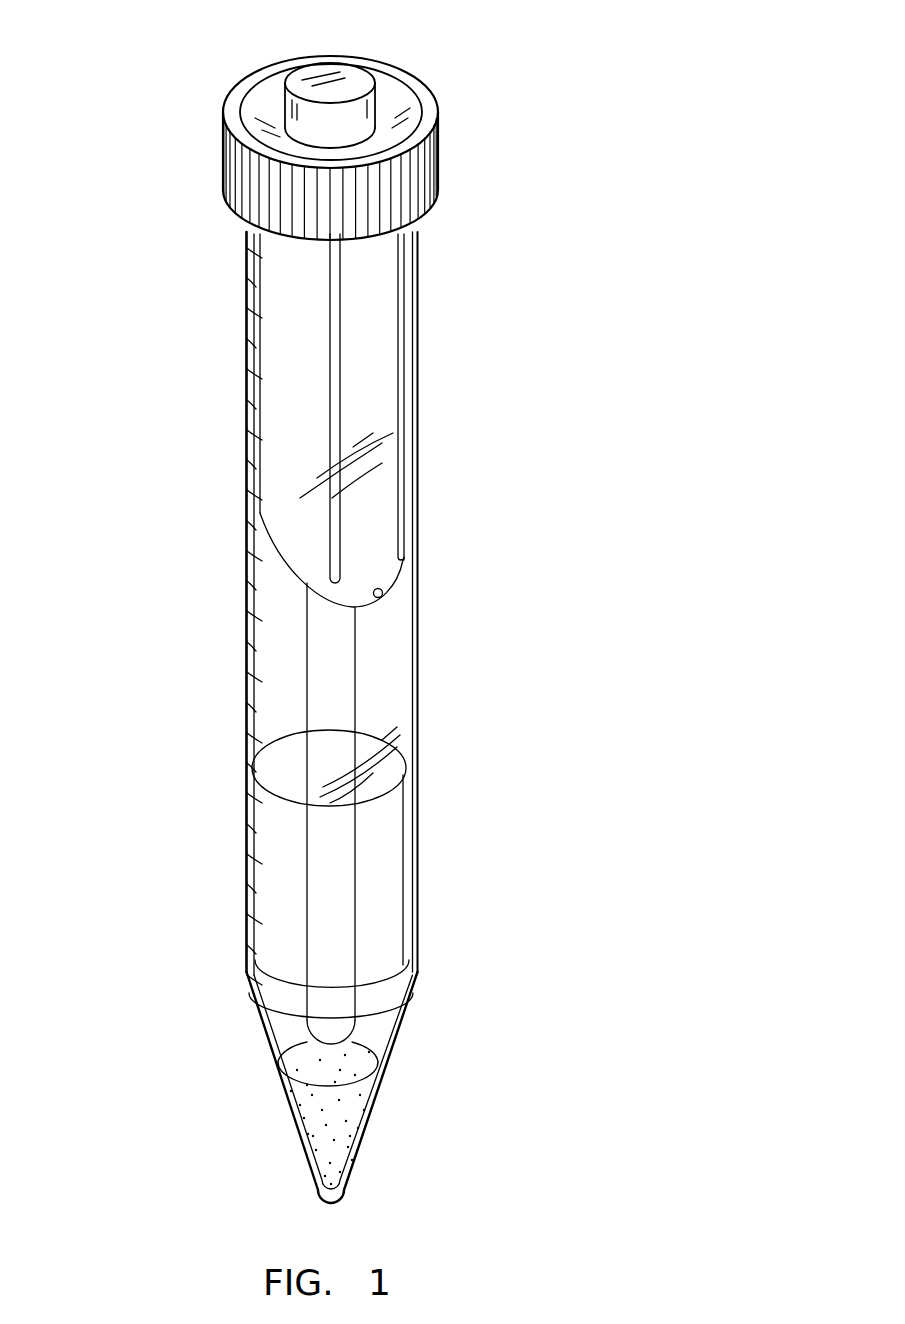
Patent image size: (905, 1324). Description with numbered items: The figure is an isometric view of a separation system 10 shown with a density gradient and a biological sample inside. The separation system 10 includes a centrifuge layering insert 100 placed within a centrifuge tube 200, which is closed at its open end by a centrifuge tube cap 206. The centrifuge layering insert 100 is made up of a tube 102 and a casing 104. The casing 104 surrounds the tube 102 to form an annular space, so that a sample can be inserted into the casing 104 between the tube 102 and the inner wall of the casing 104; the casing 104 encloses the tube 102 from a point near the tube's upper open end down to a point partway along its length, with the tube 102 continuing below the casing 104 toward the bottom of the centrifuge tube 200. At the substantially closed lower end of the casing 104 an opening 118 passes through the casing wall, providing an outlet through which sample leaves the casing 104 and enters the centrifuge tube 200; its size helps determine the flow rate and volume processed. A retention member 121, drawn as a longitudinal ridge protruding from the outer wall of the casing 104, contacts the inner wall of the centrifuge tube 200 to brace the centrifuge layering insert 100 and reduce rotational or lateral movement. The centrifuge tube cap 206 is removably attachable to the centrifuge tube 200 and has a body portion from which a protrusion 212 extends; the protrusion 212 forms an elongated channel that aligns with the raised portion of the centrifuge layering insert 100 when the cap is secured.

The separation system 10 is at (145, 128).
The centrifuge layering insert 100 is at (295, 298).
The tube 102 is at (342, 680).
The casing 104 is at (378, 302).
The opening 118 is at (385, 590).
The retention member 121 is at (340, 385).
The centrifuge tube 200 is at (418, 652).
The centrifuge tube cap 206 is at (437, 105).
The protrusion 212 is at (340, 72).